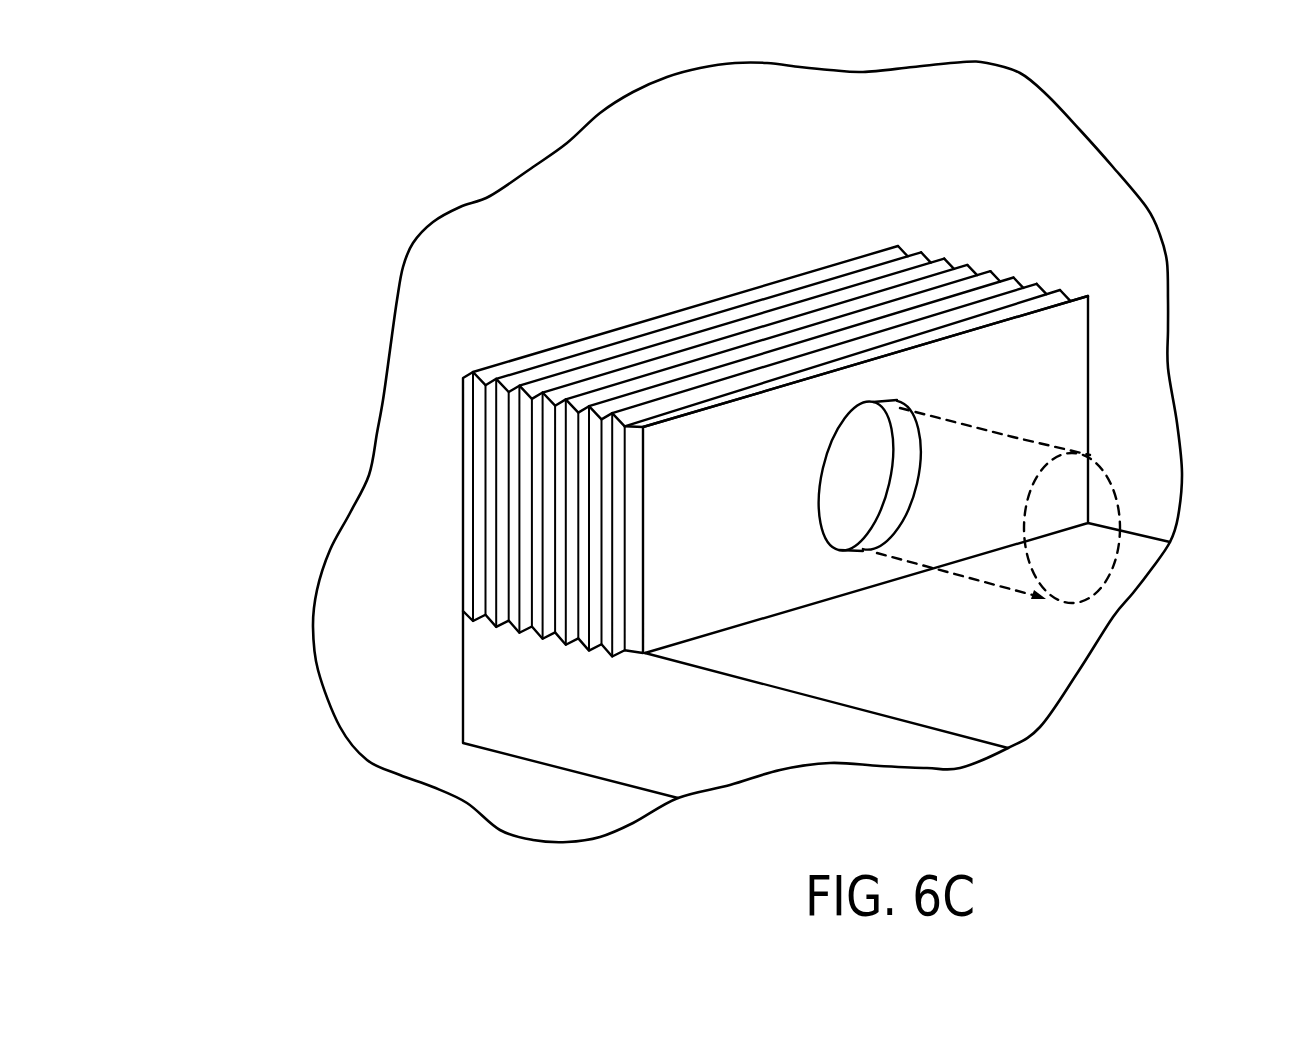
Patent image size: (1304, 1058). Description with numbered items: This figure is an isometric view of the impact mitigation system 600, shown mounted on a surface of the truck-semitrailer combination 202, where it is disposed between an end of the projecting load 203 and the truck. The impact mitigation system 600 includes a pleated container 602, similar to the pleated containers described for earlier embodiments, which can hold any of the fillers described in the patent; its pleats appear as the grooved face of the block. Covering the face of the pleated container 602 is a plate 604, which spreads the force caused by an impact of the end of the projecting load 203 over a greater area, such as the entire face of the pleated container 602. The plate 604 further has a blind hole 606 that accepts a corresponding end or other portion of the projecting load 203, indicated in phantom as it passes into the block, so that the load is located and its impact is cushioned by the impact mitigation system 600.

The truck-semitrailer combination 202 is at (274, 672).
The projecting load 203 is at (1017, 433).
The impact mitigation system 600 is at (994, 260).
The pleated container 602 is at (950, 267).
The plate 604 is at (1093, 347).
The blind hole 606 is at (840, 515).